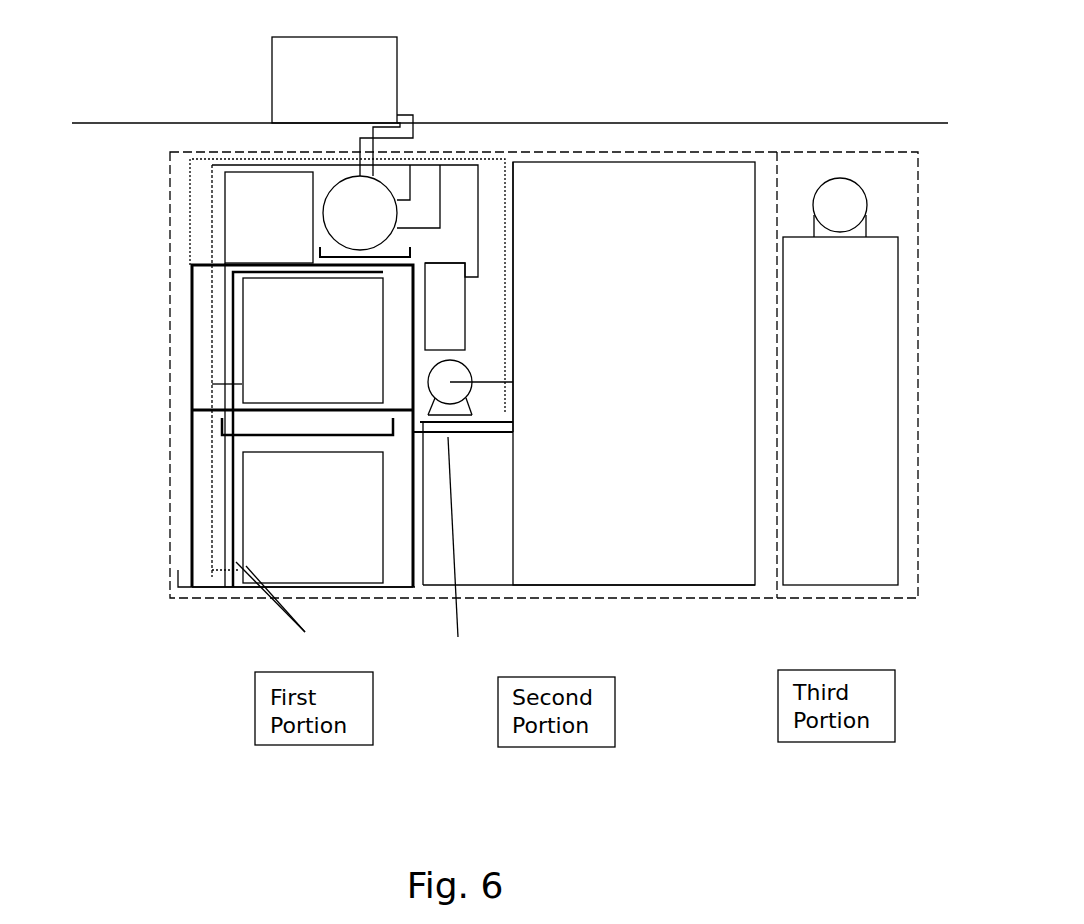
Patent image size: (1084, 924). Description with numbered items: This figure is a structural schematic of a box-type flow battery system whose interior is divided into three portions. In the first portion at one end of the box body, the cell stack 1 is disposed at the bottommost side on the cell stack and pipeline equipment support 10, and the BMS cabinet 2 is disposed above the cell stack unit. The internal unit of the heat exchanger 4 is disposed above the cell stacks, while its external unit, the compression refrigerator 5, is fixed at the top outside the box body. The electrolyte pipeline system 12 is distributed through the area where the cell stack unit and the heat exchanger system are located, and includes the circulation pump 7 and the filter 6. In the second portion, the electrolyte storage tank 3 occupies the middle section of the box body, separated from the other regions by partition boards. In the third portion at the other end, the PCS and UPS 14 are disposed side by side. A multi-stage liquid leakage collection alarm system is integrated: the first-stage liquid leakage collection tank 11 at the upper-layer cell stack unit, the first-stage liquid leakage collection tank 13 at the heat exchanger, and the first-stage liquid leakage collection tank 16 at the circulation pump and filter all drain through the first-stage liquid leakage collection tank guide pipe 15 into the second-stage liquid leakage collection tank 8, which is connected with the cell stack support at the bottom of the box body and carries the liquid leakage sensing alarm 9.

The cell stack 1 is at (313, 430).
The BMS cabinet 2 is at (269, 379).
The electrolyte storage tank 3 is at (634, 373).
The heat exchanger 4 is at (381, 207).
The compression refrigerator 5 is at (334, 80).
The filter 6 is at (445, 306).
The circulation pump 7 is at (465, 377).
The second-stage liquid leakage collection tank 8 is at (178, 575).
The liquid leakage sensing alarm 9 is at (235, 585).
The cell stack and pipeline equipment support 10 is at (192, 487).
The first-stage liquid leakage collection tank at upper-layer cell stack unit 11 is at (222, 427).
The electrolyte pipeline system 12 is at (212, 333).
The first-stage liquid leakage collection tank at heat exchanger 13 is at (320, 256).
The PCS and UPS 14 is at (840, 381).
The first-stage liquid leakage collection tank guide pipe 15 is at (287, 617).
The first-stage liquid leakage collection tank at circulation pump and filter 16 is at (458, 555).